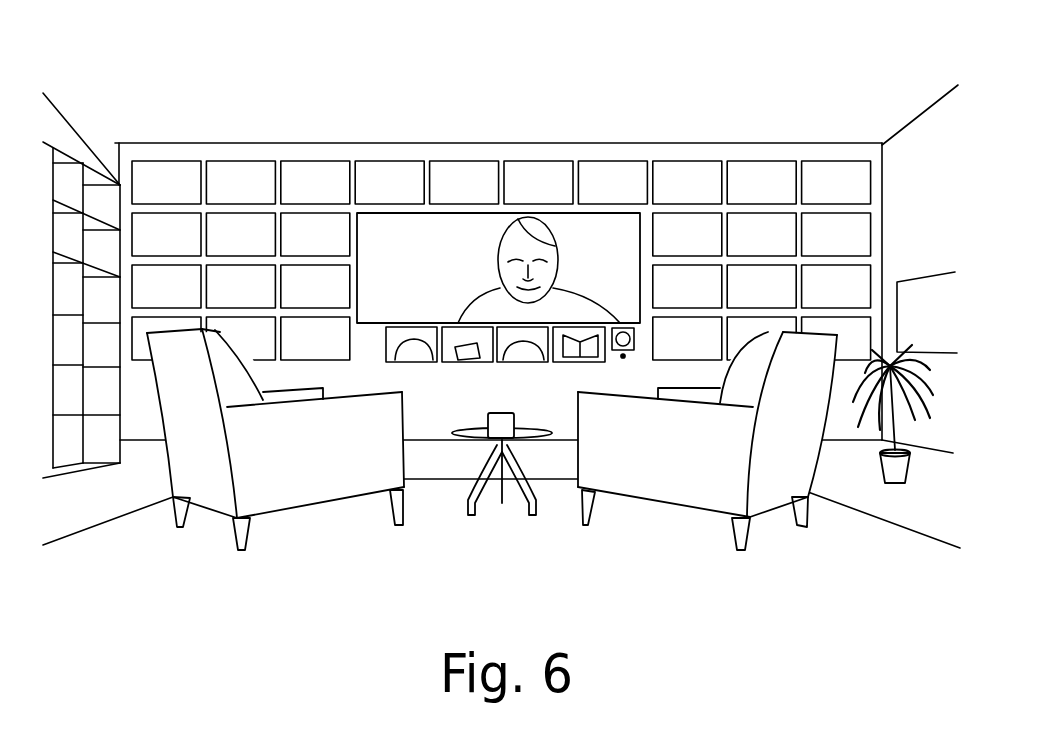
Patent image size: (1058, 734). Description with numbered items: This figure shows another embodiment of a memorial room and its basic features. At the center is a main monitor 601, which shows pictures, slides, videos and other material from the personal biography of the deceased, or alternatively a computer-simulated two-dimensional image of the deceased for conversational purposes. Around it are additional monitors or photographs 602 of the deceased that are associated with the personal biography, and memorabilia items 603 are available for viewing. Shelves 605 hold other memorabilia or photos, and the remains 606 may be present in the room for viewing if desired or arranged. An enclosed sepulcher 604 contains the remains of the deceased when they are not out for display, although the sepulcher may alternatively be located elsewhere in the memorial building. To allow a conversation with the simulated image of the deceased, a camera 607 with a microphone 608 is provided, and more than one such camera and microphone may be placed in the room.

The main monitor 601 is at (557, 226).
The additional monitors or photographs 602 is at (333, 165).
The memorabilia items 603 is at (412, 338).
The enclosed sepulcher 604 is at (923, 293).
The shelves 605 is at (97, 197).
The remains 606 is at (503, 430).
The camera 607 is at (634, 334).
The microphone 608 is at (628, 357).